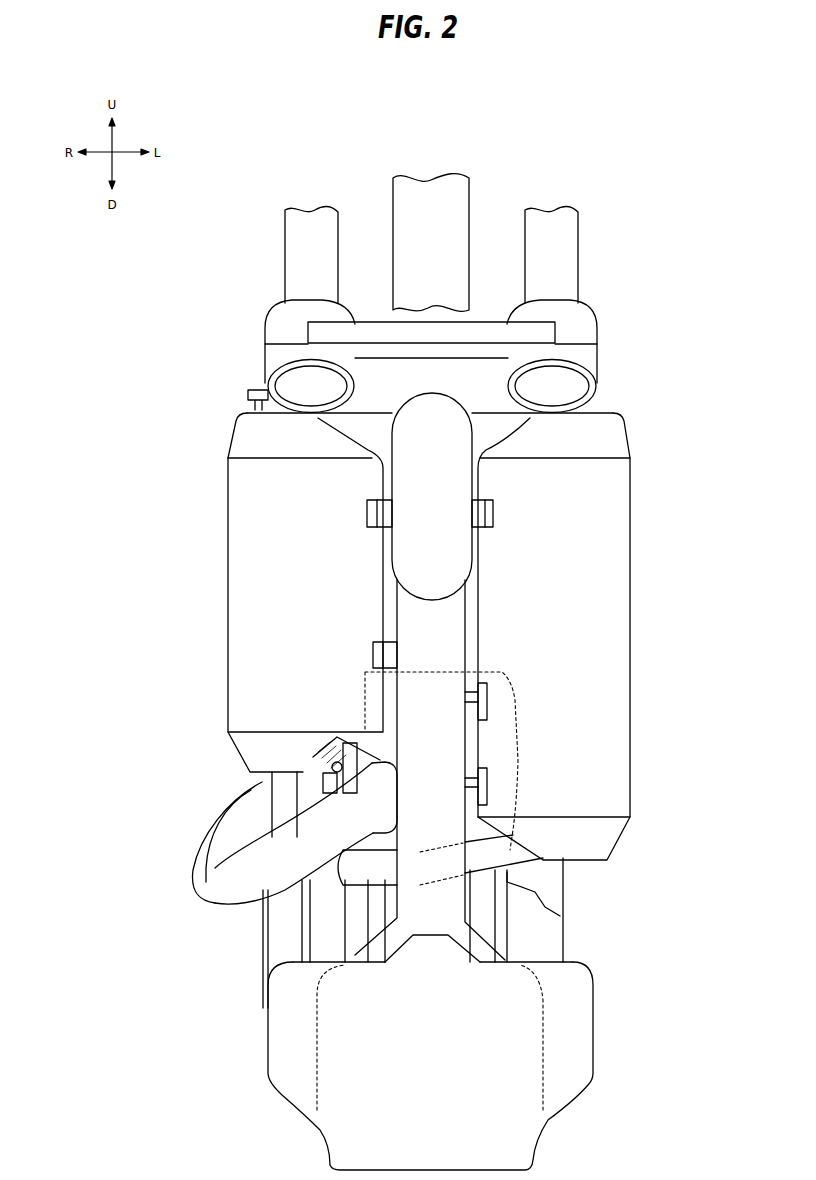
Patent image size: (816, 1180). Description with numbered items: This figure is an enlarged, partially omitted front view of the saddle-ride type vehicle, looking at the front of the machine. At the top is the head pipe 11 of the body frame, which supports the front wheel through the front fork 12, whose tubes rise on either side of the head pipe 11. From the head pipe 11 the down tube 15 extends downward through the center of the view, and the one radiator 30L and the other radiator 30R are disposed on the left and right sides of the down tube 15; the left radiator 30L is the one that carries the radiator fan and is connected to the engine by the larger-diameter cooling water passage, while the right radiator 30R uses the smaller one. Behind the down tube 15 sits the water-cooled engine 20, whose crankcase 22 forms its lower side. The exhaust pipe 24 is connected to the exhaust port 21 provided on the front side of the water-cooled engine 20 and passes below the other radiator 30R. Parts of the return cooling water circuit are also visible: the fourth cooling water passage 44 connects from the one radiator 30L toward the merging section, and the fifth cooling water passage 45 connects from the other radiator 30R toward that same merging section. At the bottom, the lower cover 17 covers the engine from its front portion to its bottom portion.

The head pipe 11 is at (462, 193).
The front fork 12 is at (570, 243).
The other radiator 30R is at (232, 432).
The one radiator 30L is at (628, 440).
The down tube 15 is at (453, 622).
The water-cooled engine 20 is at (519, 715).
The exhaust port 21 is at (397, 805).
The fifth cooling water passage 45 is at (282, 813).
The exhaust pipe 24 is at (240, 883).
The fourth cooling water passage 44 is at (543, 858).
The crankcase 22 is at (547, 945).
The lower cover 17 is at (485, 1057).